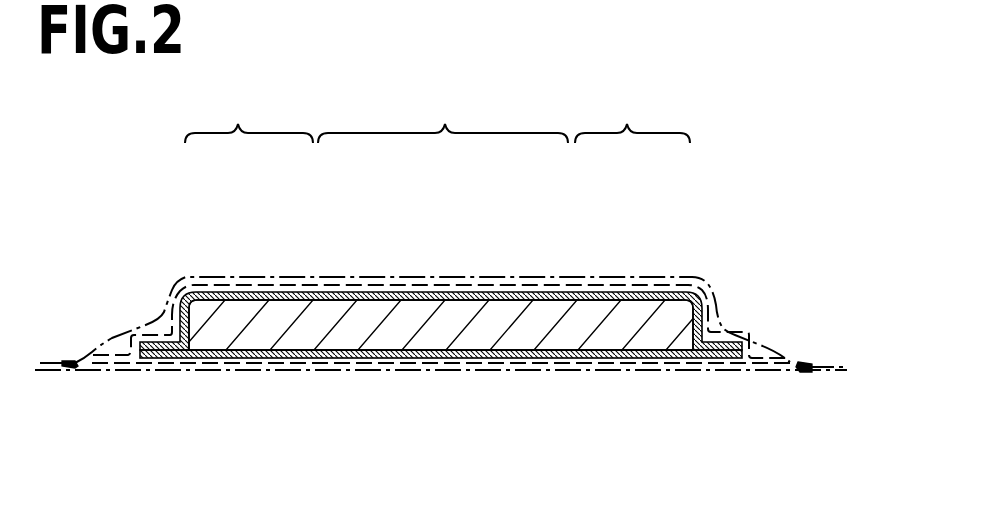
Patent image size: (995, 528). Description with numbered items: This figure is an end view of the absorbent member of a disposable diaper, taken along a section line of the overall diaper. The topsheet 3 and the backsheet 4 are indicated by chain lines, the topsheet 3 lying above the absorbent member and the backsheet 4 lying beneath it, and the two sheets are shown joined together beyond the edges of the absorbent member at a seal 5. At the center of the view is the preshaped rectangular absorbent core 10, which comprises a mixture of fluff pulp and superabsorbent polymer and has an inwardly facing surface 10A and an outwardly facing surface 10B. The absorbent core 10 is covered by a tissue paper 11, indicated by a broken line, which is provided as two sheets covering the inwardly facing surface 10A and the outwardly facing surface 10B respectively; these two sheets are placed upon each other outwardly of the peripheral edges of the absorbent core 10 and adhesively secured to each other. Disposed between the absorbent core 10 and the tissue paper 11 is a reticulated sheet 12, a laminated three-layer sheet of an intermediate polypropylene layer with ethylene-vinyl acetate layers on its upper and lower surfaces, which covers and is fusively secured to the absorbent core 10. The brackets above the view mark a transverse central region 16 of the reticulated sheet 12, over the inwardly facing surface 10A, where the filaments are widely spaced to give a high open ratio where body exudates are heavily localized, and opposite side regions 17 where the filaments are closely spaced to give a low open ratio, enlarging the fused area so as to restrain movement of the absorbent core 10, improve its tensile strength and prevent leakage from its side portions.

The topsheet 3 is at (640, 277).
The backsheet 4 is at (732, 373).
The sealed edge portion 5 is at (812, 362).
The absorbent core 10 is at (608, 328).
The inwardly facing surface 10A is at (388, 297).
The outwardly facing surface 10B is at (398, 355).
The tissue paper 11 is at (292, 285).
The reticulated sheet 12 is at (547, 295).
The transverse central region 16 is at (443, 112).
The opposite side regions 17 is at (437, 112).